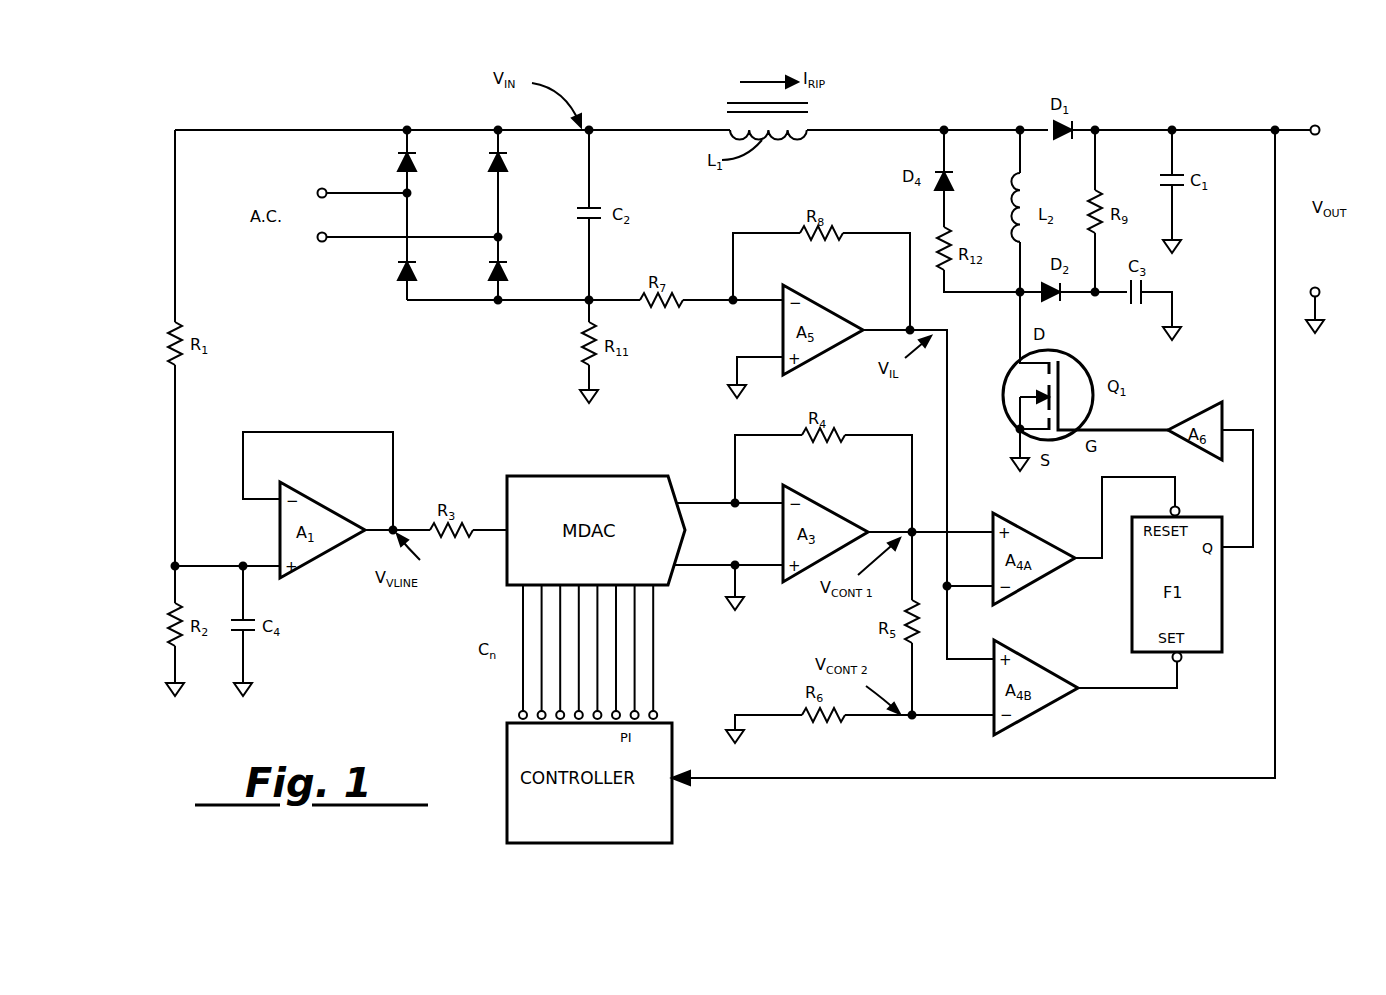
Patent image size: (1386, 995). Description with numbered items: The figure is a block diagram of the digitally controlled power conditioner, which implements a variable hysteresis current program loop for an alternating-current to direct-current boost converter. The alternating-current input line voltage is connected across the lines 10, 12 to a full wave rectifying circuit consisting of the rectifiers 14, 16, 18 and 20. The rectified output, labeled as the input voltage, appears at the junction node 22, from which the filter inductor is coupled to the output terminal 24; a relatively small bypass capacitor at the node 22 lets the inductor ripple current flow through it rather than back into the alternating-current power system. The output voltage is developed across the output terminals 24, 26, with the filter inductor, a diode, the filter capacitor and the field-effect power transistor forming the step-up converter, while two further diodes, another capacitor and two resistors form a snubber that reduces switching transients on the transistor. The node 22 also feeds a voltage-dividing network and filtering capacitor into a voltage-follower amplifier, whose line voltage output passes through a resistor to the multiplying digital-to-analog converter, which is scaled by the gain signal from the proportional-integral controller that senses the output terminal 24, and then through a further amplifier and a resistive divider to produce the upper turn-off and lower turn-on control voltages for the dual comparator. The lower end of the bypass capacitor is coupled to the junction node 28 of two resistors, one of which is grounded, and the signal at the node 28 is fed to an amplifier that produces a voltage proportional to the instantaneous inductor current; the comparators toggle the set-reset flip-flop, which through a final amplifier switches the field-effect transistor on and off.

The line 10 is at (342, 188).
The line 12 is at (342, 242).
The rectifier 14 is at (400, 165).
The rectifier 16 is at (505, 166).
The rectifier 18 is at (398, 272).
The rectifier 20 is at (510, 272).
The junction node 22 is at (589, 128).
The output terminal 24 is at (1323, 130).
The output terminal 26 is at (1323, 292).
The junction node 28 is at (587, 303).